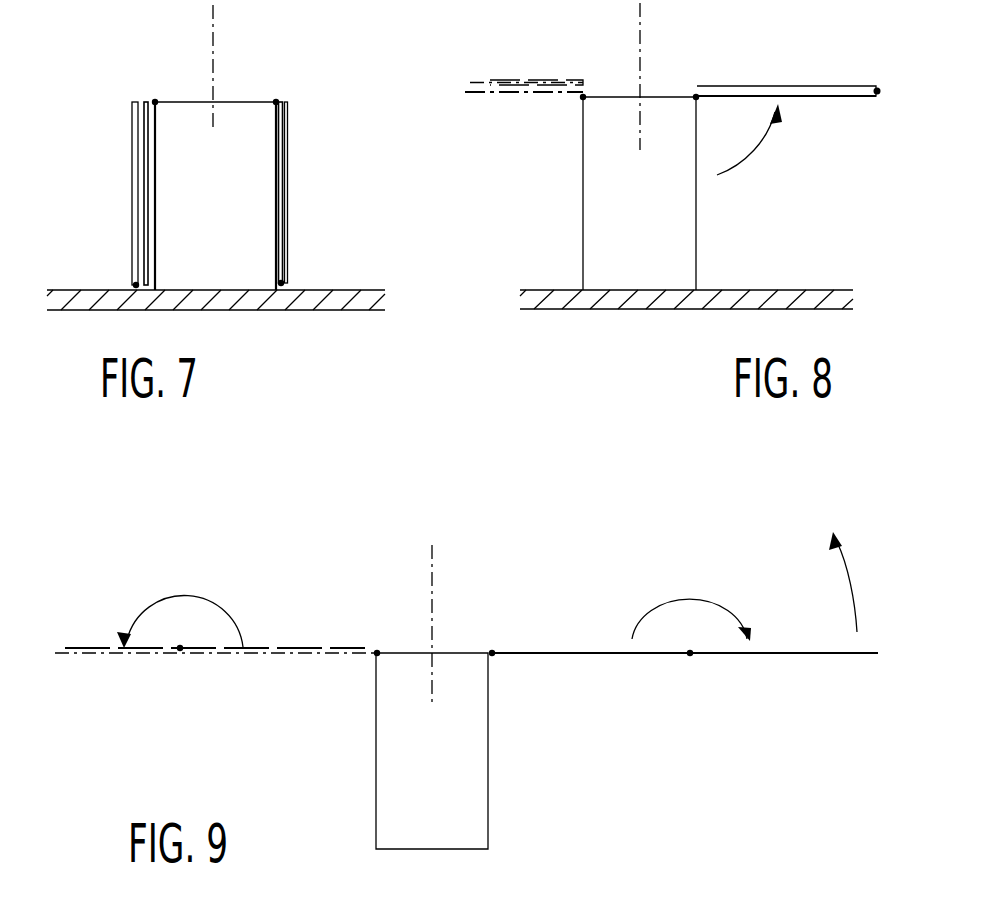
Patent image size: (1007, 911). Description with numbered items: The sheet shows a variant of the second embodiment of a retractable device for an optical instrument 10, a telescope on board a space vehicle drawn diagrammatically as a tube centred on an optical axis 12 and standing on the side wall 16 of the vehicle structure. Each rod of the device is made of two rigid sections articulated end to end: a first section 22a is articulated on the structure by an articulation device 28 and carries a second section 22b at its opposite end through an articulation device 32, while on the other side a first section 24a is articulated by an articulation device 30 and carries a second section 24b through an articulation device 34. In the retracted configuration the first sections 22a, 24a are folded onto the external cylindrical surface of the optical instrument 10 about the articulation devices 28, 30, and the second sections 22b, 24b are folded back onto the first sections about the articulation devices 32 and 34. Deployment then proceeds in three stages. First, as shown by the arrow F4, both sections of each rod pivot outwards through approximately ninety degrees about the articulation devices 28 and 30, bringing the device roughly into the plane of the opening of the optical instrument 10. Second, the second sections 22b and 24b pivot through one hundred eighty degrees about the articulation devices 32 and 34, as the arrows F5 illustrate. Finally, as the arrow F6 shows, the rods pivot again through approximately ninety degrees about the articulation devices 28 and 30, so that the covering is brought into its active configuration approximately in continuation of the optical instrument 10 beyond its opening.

In FIG. 7, the optical instrument 10 is at (231, 160).
In FIG. 8, the optical instrument 10 is at (610, 222).
In FIG. 9, the optical instrument 10 is at (457, 782).
In FIG. 7, the optical axis 12 is at (212, 30).
In FIG. 8, the optical axis 12 is at (641, 48).
In FIG. 9, the optical axis 12 is at (431, 578).
In FIG. 7, the side wall 16 is at (330, 298).
In FIG. 8, the side wall 16 is at (595, 303).
In FIG. 7, the first section of first rod 22a is at (147, 138).
In FIG. 8, the first section of first rod 22a is at (505, 94).
In FIG. 9, the first section of first rod 22a is at (250, 653).
In FIG. 7, the second section of first rod 22b is at (135, 213).
In FIG. 8, the second section of first rod 22b is at (517, 80).
In FIG. 9, the second section of first rod 22b is at (85, 648).
In FIG. 7, the first section of second rod 24a is at (283, 162).
In FIG. 8, the first section of second rod 24a is at (820, 98).
In FIG. 9, the first section of second rod 24a is at (550, 654).
In FIG. 7, the second section of second rod 24b is at (284, 220).
In FIG. 8, the second section of second rod 24b is at (772, 85).
In FIG. 9, the second section of second rod 24b is at (785, 654).
In FIG. 7, the articulation device 28 is at (172, 62).
In FIG. 8, the articulation device 28 is at (582, 98).
In FIG. 9, the articulation device 28 is at (376, 654).
In FIG. 7, the articulation device 30 is at (278, 102).
In FIG. 8, the articulation device 30 is at (698, 98).
In FIG. 9, the articulation device 30 is at (492, 652).
In FIG. 7, the articulation device 32 is at (134, 285).
In FIG. 9, the articulation device 32 is at (178, 650).
In FIG. 7, the articulation device 34 is at (284, 283).
In FIG. 9, the articulation device 34 is at (690, 655).
In FIG. 8, the arrow F4 is at (752, 165).
In FIG. 9, the arrows F5 is at (199, 589).
In FIG. 9, the arrow F6 is at (848, 575).